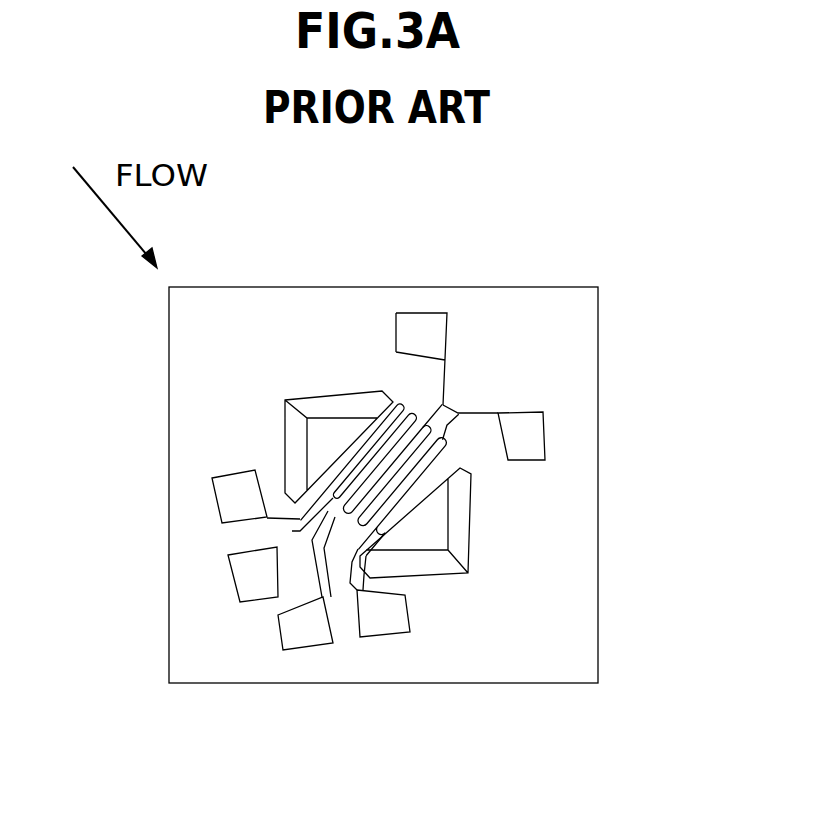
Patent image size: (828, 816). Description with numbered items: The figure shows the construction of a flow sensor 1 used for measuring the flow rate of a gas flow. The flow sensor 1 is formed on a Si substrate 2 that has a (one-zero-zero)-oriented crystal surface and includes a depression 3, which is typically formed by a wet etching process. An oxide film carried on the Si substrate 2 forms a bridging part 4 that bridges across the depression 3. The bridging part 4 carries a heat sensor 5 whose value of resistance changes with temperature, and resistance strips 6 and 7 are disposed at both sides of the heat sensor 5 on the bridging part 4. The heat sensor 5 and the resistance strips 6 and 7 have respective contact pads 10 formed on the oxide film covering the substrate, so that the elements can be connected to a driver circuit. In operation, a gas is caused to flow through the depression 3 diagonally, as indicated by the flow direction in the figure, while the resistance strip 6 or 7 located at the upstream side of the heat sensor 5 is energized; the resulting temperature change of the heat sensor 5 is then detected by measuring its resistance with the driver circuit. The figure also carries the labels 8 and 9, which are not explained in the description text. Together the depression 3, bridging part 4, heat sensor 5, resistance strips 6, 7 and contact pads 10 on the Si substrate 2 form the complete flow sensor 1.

The flow sensor 1 is at (627, 313).
The Si substrate 2 is at (576, 377).
The depression 3 is at (332, 438).
The bridging part 4 is at (398, 522).
The heat sensor 5 is at (312, 545).
The resistance strip 6 is at (300, 538).
The resistance strip 7 is at (350, 562).
The heater electrode 8 is at (395, 392).
The heating resistor 9 is at (505, 532).
The contact pads 10 is at (418, 323).